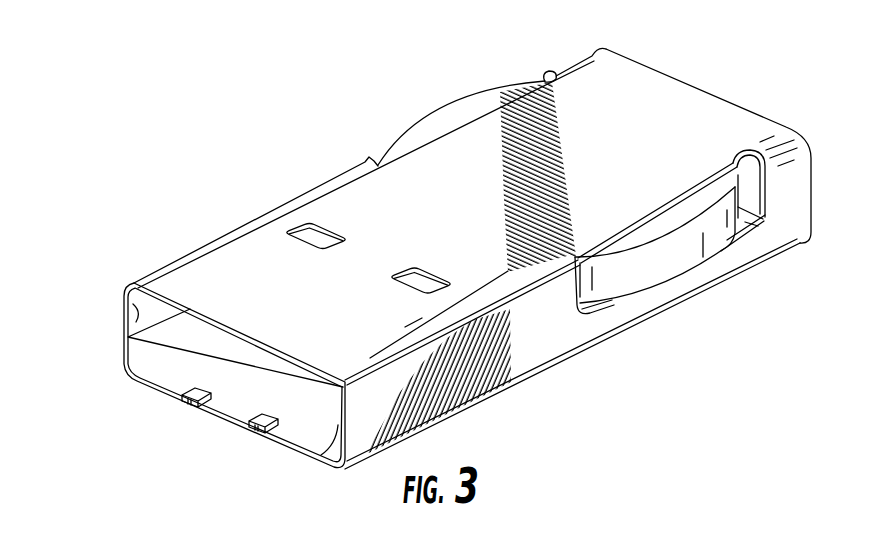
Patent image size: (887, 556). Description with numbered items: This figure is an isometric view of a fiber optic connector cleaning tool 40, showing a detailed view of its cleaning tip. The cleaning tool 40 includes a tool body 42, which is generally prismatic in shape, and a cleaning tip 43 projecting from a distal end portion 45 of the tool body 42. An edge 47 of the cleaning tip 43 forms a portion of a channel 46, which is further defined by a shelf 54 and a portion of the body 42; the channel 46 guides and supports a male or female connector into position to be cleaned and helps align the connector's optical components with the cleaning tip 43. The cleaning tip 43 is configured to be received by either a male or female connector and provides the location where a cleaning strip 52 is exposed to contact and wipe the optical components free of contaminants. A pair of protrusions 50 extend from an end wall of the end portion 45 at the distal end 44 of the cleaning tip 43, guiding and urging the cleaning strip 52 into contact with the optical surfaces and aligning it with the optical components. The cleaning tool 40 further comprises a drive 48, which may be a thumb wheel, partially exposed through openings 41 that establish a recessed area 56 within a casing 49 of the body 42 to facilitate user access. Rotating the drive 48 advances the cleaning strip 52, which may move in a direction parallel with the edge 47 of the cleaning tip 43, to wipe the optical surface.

The fiber optic connector cleaning tool 40 is at (171, 226).
The openings 41 is at (548, 78).
The tool body 42 is at (660, 112).
The cleaning tip 43 is at (215, 440).
The distal end 44 is at (182, 282).
The distal end portion 45 is at (104, 376).
The channel 46 is at (130, 334).
The edge 47 is at (183, 362).
The drive 48 is at (657, 262).
The casing 49 is at (348, 193).
The protrusions 50 is at (183, 396).
The cleaning strip 52 is at (193, 408).
The shelf 54 is at (338, 425).
The recessed area 56 is at (763, 218).